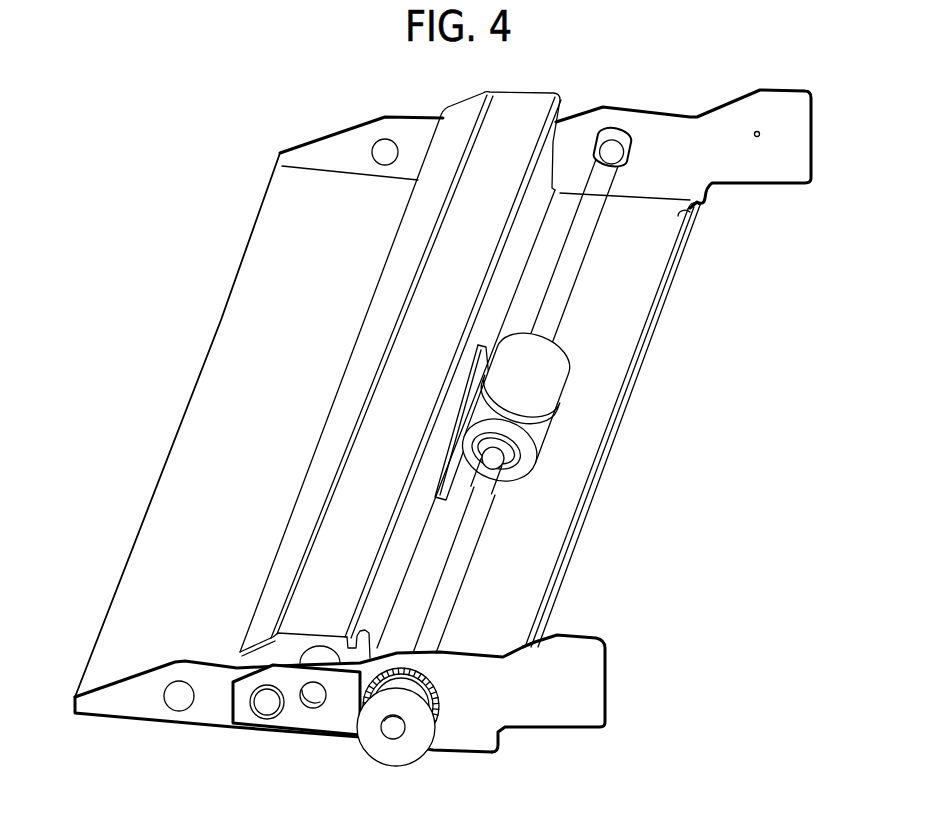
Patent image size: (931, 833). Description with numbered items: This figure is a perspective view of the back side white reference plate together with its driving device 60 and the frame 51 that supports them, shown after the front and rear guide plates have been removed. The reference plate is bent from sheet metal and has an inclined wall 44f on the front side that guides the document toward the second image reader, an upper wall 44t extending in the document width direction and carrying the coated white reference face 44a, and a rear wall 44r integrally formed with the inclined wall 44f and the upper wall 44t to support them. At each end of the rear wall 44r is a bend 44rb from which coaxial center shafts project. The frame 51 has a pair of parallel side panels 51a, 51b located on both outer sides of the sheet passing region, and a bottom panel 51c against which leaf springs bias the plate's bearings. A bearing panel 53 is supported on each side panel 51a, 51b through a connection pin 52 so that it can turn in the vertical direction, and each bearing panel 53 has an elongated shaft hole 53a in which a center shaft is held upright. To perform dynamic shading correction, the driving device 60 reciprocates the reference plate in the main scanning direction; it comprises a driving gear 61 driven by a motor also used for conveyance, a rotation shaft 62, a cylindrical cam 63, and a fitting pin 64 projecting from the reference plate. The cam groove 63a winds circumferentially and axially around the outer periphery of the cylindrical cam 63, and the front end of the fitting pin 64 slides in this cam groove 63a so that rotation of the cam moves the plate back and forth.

The white reference face 44a is at (384, 359).
The upper wall 44t is at (513, 103).
The rear wall 44r is at (510, 253).
The inclined wall 44f is at (281, 558).
The both-end bends 44rb is at (362, 647).
The frame 51 is at (185, 470).
The side panel 51a is at (583, 695).
The side panel 51b is at (692, 123).
The bottom panel 51c is at (250, 301).
The connection pin 52 is at (265, 709).
The bearing panel 53 is at (296, 732).
The shaft hole 53a is at (310, 702).
The driving device 60 is at (600, 376).
The driving gear 61 is at (393, 750).
The rotation shaft 62 is at (587, 230).
The cylindrical cam 63 is at (563, 365).
The cam groove 63a is at (557, 397).
The fitting pin 64 is at (473, 413).